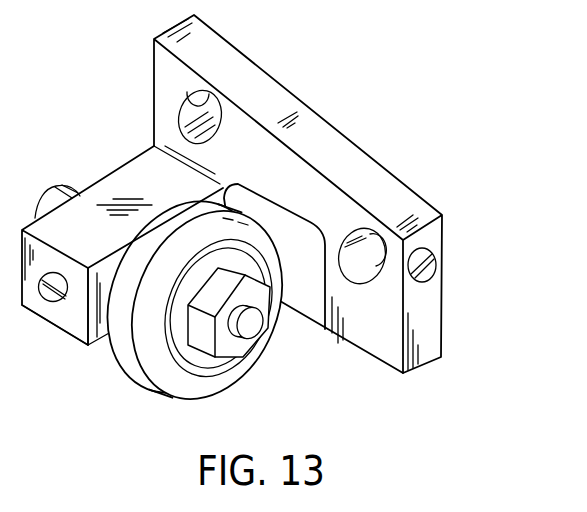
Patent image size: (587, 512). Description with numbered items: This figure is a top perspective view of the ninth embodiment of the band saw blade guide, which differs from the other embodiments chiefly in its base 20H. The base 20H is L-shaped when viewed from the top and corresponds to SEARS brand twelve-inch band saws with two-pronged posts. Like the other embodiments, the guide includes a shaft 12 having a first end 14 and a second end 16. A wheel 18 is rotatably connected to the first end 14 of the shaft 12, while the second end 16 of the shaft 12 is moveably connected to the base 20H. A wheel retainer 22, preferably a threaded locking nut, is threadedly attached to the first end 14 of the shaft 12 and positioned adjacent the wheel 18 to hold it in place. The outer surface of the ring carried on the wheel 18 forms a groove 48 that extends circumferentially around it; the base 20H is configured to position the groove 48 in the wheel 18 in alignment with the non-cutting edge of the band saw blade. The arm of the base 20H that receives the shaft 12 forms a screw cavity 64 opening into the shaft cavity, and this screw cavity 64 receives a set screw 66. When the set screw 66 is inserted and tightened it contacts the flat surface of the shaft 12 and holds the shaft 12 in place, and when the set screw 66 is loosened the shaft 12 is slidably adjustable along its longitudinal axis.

The base 20H is at (328, 122).
The shaft 12 is at (79, 185).
The second end 16 is at (45, 190).
The set screw 66 is at (39, 291).
The screw cavity 64 is at (70, 300).
The groove 48 is at (110, 347).
The wheel 18 is at (160, 406).
The wheel retainer 22 is at (223, 352).
The first end 14 is at (252, 331).